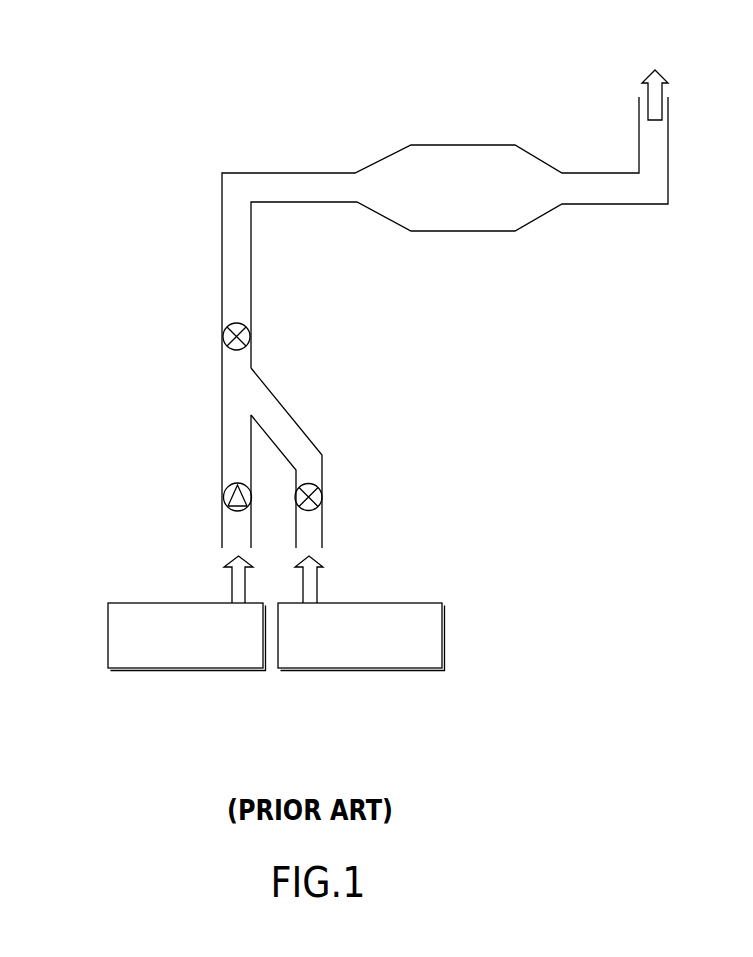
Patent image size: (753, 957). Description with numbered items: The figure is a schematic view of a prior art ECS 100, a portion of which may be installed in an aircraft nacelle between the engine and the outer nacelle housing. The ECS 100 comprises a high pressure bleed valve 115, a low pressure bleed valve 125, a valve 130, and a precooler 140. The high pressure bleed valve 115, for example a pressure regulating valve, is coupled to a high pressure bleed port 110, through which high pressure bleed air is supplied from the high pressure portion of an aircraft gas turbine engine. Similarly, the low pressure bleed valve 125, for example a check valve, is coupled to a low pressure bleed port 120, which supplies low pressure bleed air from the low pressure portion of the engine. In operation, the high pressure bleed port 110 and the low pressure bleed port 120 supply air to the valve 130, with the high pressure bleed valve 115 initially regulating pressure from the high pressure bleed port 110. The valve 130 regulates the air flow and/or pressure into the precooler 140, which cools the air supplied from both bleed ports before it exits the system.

The ECS 100 is at (110, 53).
The high pressure bleed port 110 is at (442, 632).
The high pressure bleed valve 115 is at (322, 497).
The low pressure bleed port 120 is at (108, 633).
The low pressure bleed valve 125 is at (222, 492).
The valve 130 is at (251, 337).
The precooler 140 is at (489, 232).